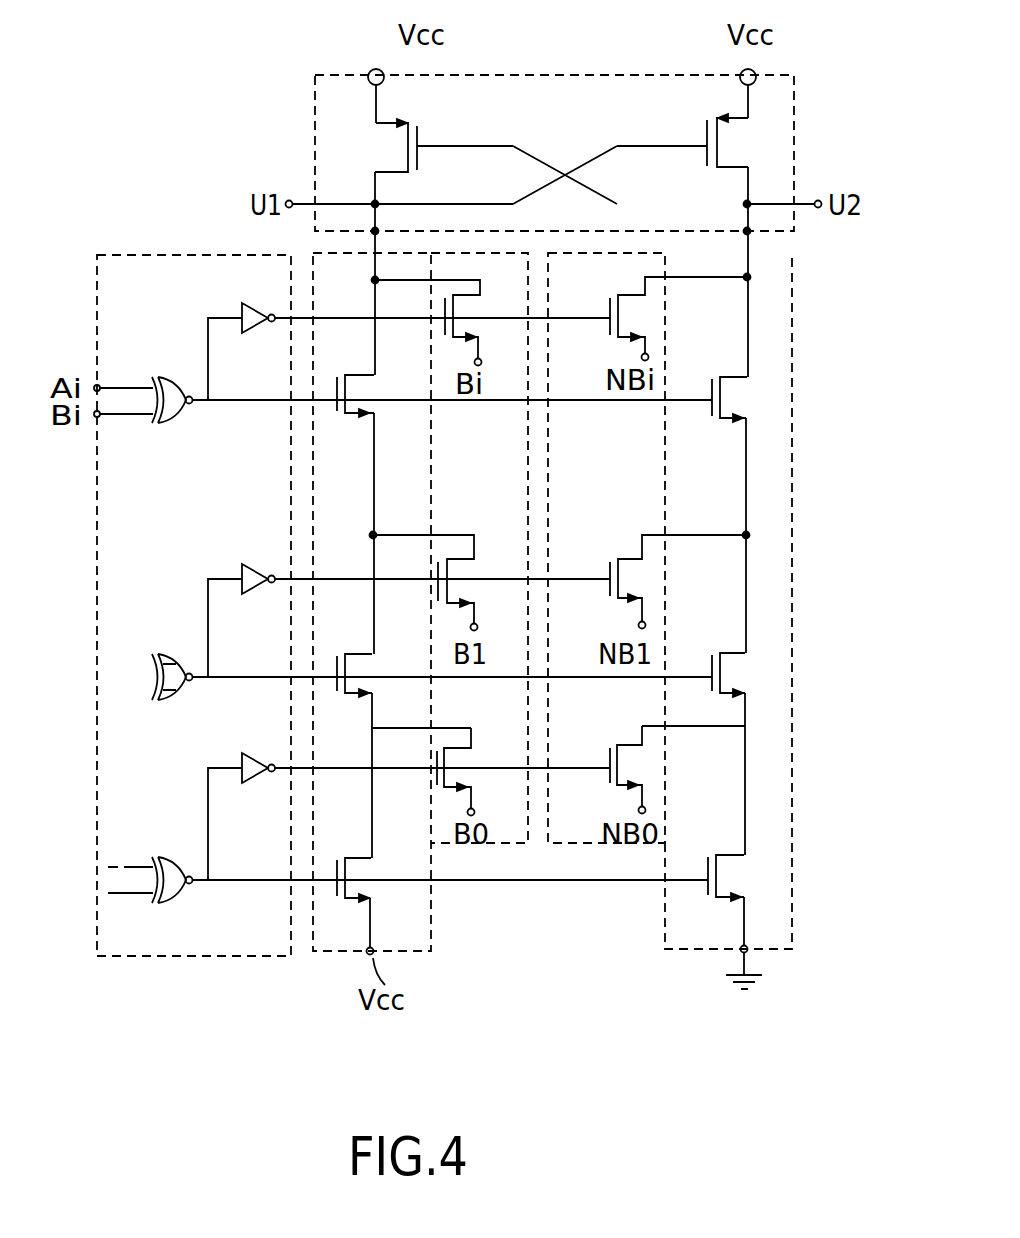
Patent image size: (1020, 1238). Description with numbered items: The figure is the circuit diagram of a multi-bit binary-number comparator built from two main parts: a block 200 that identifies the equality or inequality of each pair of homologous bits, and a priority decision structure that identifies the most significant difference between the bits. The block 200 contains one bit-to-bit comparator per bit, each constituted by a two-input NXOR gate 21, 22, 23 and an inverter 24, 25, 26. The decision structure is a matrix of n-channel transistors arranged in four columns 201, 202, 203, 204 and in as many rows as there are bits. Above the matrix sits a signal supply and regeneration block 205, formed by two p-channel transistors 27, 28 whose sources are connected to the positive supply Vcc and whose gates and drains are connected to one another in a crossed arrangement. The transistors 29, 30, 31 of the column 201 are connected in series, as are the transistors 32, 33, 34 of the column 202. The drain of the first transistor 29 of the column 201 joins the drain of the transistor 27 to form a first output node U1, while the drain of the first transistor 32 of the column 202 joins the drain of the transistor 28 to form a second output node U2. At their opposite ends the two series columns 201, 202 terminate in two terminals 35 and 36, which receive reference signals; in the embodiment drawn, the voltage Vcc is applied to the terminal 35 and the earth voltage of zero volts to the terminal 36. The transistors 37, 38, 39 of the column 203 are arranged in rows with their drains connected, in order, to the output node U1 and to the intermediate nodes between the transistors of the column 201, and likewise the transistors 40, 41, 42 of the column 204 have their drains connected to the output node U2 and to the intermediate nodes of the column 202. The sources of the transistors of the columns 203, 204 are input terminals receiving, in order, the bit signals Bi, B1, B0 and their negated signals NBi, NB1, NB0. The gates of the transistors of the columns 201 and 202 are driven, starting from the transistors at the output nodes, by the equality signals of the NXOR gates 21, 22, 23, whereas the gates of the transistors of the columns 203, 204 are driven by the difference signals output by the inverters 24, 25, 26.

The NXOR gate 21 is at (173, 412).
The NXOR gate 22 is at (166, 656).
The NXOR gate 23 is at (170, 858).
The inverter 24 is at (252, 330).
The inverter 25 is at (252, 596).
The inverter 26 is at (250, 785).
The p-channel transistor 27 is at (408, 146).
The p-channel transistor 28 is at (717, 153).
The transistor 29 is at (347, 415).
The transistor 30 is at (350, 654).
The transistor 31 is at (355, 858).
The transistor 32 is at (722, 404).
The transistor 33 is at (722, 682).
The transistor 34 is at (718, 884).
The terminal 35 is at (365, 957).
The terminal 36 is at (750, 952).
The transistor 37 is at (452, 312).
The transistor 38 is at (447, 572).
The transistor 39 is at (447, 762).
The transistor 40 is at (636, 293).
The transistor 41 is at (628, 553).
The transistor 42 is at (622, 743).
The block 200 is at (178, 253).
The column 201 is at (418, 953).
The column 202 is at (705, 952).
The column 203 is at (505, 845).
The column 204 is at (628, 845).
The signal supply and regeneration block 205 is at (315, 105).